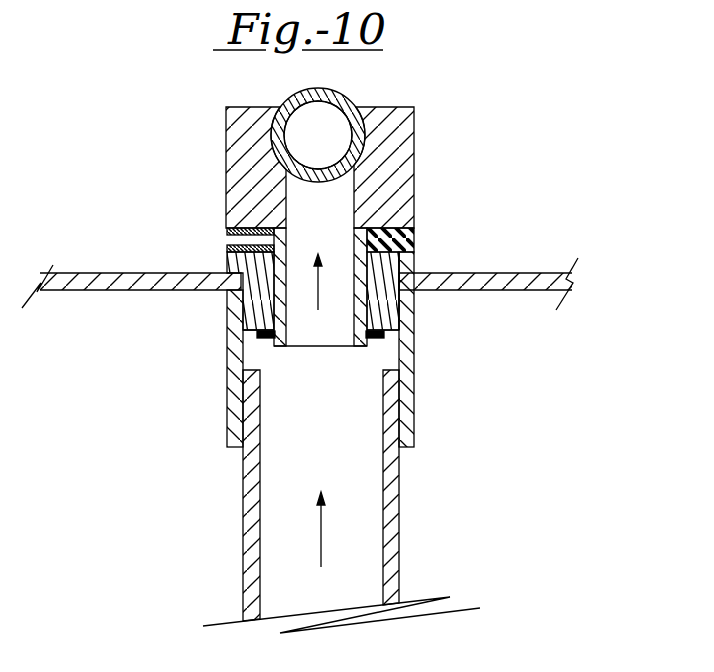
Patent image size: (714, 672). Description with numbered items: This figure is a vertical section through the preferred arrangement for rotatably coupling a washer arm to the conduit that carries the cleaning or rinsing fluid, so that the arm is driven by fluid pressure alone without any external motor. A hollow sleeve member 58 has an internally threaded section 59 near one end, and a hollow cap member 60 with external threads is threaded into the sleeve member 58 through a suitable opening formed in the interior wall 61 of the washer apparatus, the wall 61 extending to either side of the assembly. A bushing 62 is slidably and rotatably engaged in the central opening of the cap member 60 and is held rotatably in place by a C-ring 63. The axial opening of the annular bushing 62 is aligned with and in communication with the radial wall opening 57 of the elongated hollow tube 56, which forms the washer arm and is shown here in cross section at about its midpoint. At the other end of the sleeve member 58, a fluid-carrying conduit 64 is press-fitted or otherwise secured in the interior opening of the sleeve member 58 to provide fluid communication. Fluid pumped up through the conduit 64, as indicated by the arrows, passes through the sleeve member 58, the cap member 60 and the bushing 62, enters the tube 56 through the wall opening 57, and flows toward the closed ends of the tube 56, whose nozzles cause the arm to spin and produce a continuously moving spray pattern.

The tube 56 is at (340, 93).
The wall opening 57 is at (305, 157).
The hollow sleeve member 58 is at (414, 428).
The internally threaded section 59 is at (398, 313).
The hollow cap member 60 is at (415, 260).
The interior wall 61 is at (542, 273).
The bushing 62 is at (414, 183).
The C-ring 63 is at (266, 342).
The fluid-carrying conduit 64 is at (400, 537).